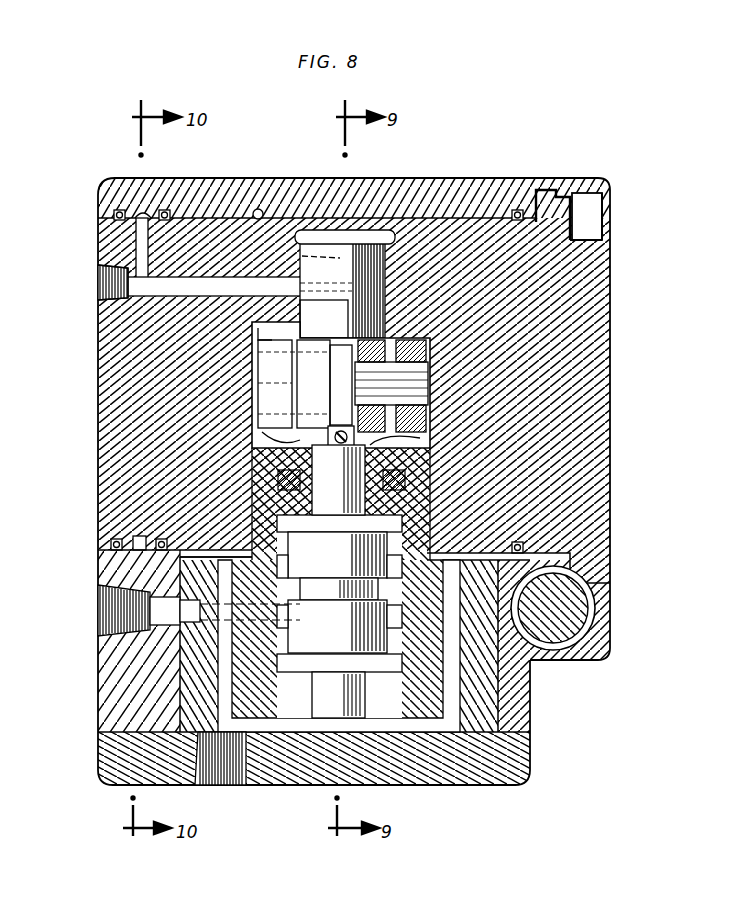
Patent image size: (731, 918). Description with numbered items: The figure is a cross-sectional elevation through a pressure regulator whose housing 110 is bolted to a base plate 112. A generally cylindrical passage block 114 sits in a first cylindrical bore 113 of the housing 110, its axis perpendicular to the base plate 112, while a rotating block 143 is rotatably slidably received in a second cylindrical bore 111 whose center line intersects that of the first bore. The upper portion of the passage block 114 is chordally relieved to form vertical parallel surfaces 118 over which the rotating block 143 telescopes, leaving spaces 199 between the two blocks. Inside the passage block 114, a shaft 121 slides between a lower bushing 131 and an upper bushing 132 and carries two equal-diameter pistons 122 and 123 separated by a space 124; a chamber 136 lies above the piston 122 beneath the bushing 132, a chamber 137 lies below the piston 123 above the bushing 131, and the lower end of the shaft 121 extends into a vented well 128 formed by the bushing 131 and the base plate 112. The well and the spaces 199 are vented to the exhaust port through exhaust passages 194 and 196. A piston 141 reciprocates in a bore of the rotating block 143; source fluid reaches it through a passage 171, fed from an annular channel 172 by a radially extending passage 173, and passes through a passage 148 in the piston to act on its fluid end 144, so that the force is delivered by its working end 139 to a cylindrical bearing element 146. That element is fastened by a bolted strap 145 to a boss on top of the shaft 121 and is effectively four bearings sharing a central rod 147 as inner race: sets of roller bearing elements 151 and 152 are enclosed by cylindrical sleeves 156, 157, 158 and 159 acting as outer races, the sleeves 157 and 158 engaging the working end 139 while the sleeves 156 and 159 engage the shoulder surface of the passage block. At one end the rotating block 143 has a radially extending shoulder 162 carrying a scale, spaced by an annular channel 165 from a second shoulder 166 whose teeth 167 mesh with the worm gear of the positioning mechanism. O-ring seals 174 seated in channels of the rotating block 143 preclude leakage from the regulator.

The housing 110 is at (422, 192).
The second cylindrical bore 111 is at (257, 208).
The base plate 112 is at (106, 768).
The first cylindrical bore 113 is at (495, 735).
The passage block 114 is at (492, 694).
The vertical parallel surfaces 118 is at (270, 486).
The shaft 121 is at (290, 636).
The piston 122 is at (330, 570).
The piston 123 is at (335, 644).
The space 124 is at (384, 594).
The vented well 128 is at (252, 745).
The lower bushing 131 is at (374, 720).
The upper bushing 132 is at (262, 462).
The chamber 136 is at (400, 522).
The chamber 137 is at (400, 663).
The working end portion 139 is at (342, 340).
The piston 141 is at (386, 297).
The rotating block 143 is at (596, 458).
The fluid end portion 144 is at (338, 230).
The bolted strap 145 is at (340, 386).
The cylindrical bearing element 146 is at (250, 382).
The central rod 147 is at (426, 408).
The passage 148 is at (300, 256).
The roller bearing elements 151 is at (428, 364).
The roller bearing elements 152 is at (378, 362).
The cylindrical sleeve 156 is at (426, 425).
The cylindrical sleeve 157 is at (424, 448).
The cylindrical sleeve 158 is at (280, 440).
The cylindrical sleeve 159 is at (262, 333).
The shoulder 162 is at (606, 205).
The annular channel 165 is at (603, 222).
The shoulder 166 is at (576, 212).
The teeth 167 is at (550, 200).
The passage 171 is at (218, 285).
The annular channel 172 is at (141, 212).
The radially extending passage 173 is at (136, 248).
The O-ring seals 174 is at (516, 208).
The exhaust passage 194 is at (262, 697).
The exhaust passage 196 is at (450, 637).
The spaces 199 is at (210, 548).